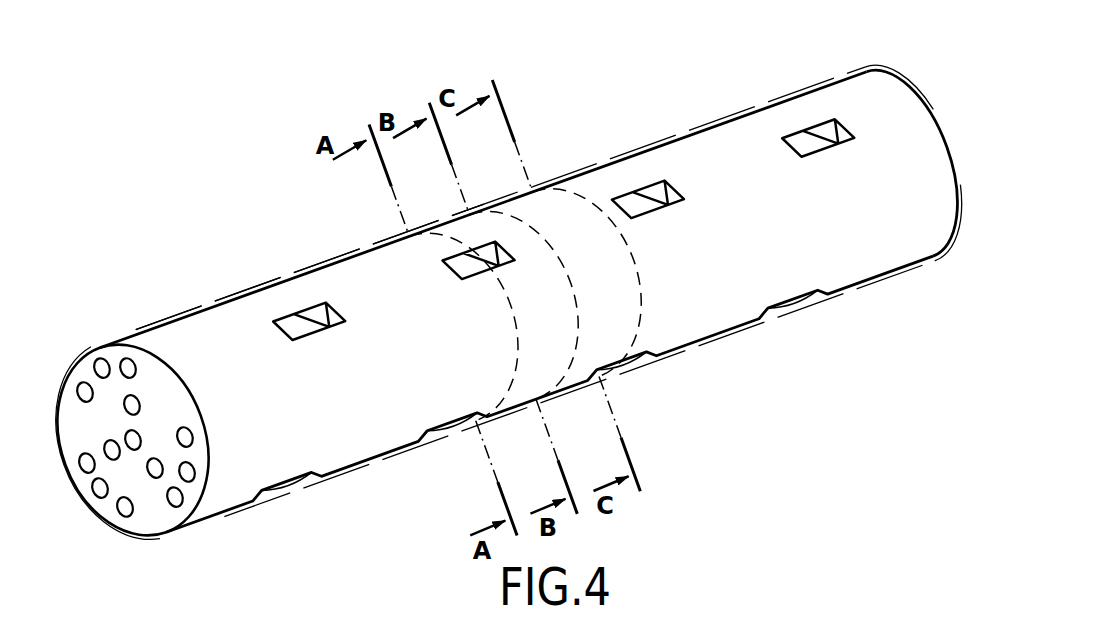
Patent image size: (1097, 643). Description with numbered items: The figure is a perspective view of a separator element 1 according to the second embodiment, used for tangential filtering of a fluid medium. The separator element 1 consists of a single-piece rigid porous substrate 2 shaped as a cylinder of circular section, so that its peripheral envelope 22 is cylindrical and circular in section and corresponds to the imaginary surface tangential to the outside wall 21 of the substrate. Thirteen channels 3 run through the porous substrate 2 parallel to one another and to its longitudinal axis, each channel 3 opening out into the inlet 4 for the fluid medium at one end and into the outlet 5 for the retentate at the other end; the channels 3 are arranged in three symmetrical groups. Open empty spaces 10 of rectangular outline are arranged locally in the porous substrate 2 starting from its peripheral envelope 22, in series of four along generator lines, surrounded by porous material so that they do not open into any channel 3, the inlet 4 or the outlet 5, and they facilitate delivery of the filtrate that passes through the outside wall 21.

The separator element 1 is at (142, 182).
The porous substrate 2 is at (700, 155).
The outside wall 21 is at (333, 267).
The peripheral envelope 22 is at (927, 262).
The channel 3 is at (86, 462).
The inlet 4 is at (74, 397).
The outlet 5 is at (930, 102).
The open empty space 10 is at (290, 332).